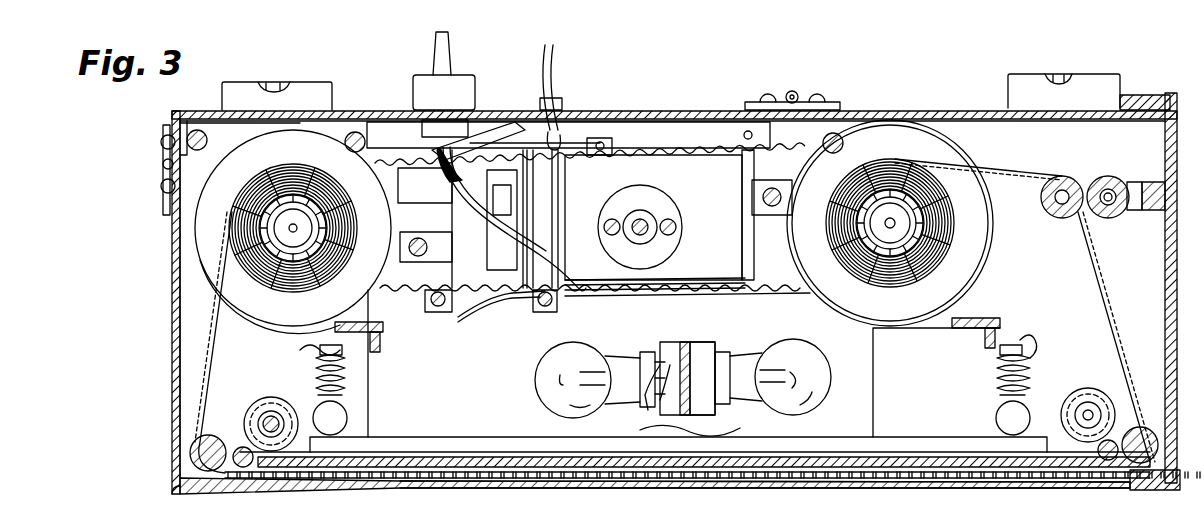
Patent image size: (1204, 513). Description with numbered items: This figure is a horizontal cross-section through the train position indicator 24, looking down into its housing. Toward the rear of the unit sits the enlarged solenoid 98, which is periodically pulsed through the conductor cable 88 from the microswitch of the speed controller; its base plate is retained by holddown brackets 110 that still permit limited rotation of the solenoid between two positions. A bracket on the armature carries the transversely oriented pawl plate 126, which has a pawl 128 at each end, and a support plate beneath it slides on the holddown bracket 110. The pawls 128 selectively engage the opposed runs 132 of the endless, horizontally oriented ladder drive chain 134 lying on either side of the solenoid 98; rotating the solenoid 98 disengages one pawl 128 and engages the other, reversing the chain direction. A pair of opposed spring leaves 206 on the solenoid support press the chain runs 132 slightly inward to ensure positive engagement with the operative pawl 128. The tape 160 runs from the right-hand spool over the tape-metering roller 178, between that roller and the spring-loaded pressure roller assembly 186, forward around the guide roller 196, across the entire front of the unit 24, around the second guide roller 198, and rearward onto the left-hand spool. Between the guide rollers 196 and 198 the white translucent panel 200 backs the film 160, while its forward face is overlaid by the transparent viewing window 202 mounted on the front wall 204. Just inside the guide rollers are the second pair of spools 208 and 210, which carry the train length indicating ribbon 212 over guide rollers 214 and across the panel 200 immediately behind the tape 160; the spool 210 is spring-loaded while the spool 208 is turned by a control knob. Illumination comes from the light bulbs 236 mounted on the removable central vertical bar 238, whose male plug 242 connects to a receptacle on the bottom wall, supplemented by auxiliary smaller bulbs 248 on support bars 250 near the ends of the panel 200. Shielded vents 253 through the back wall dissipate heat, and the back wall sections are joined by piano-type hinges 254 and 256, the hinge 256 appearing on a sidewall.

The train position indicator 24 is at (1163, 292).
The conductor cable 88 is at (556, 85).
The solenoid 98 is at (650, 294).
The holddown brackets 110 is at (758, 190).
The pawl plate 126 is at (478, 245).
The pawl 128 is at (560, 162).
The chain runs 132 is at (695, 160).
The ladder drive chain 134 is at (802, 292).
The tape 160 is at (590, 478).
The tape-metering roller 178 is at (1052, 214).
The spring-loaded pressure roller assembly 186 is at (1110, 173).
The guide roller 196 is at (1140, 468).
The second guide roller 198 is at (228, 428).
The white translucent panel 200 is at (886, 456).
The transparent viewing window 202 is at (931, 483).
The front wall 204 is at (803, 481).
The spring leaves 206 is at (478, 132).
The spool 208 is at (1080, 396).
The spring-loaded spool 210 is at (262, 402).
The train length indicating ribbon 212 is at (565, 454).
The guide rollers 214 is at (247, 470).
The light bulbs 236 is at (535, 384).
The vertical bar 238 is at (683, 345).
The male plug 242 is at (720, 332).
The auxiliary smaller bulbs 248 is at (335, 421).
The support bars 250 is at (375, 336).
The shielded vents 253 is at (311, 95).
The piano-type hinge 254 is at (791, 92).
The piano-type hinge 256 is at (165, 168).